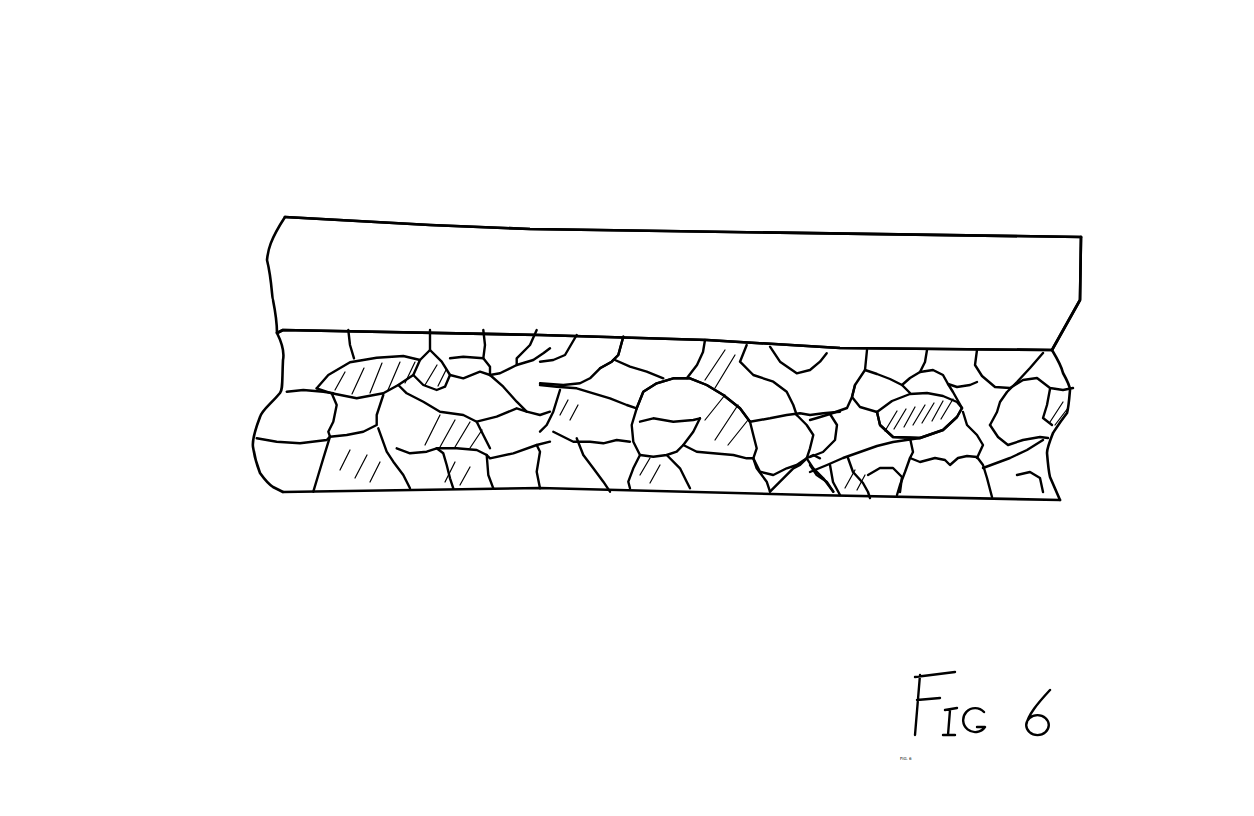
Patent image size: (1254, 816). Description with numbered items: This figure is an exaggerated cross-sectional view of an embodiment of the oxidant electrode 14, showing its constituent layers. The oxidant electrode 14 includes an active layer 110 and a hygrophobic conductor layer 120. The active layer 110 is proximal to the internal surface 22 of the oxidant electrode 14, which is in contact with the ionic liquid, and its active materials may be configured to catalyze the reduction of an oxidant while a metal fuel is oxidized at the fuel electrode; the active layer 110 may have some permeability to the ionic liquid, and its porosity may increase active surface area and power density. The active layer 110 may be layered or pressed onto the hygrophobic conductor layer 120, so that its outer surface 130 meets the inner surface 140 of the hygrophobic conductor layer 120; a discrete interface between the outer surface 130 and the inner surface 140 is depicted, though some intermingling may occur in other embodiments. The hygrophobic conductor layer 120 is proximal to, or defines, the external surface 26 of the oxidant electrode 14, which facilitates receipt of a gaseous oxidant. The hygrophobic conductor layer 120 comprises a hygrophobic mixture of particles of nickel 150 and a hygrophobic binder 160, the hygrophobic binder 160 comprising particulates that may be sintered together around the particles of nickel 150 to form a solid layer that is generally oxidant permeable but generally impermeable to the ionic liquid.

The oxidant electrode 14 is at (207, 22).
The internal surface 22 is at (718, 152).
The external surface 26 is at (515, 581).
The active layer 110 is at (1098, 240).
The hygrophobic conductor layer 120 is at (1093, 358).
The outer surface 130 is at (726, 299).
The inner surface 140 is at (636, 352).
The particles of nickel 150 is at (655, 475).
The hygrophobic binder 160 is at (1005, 480).